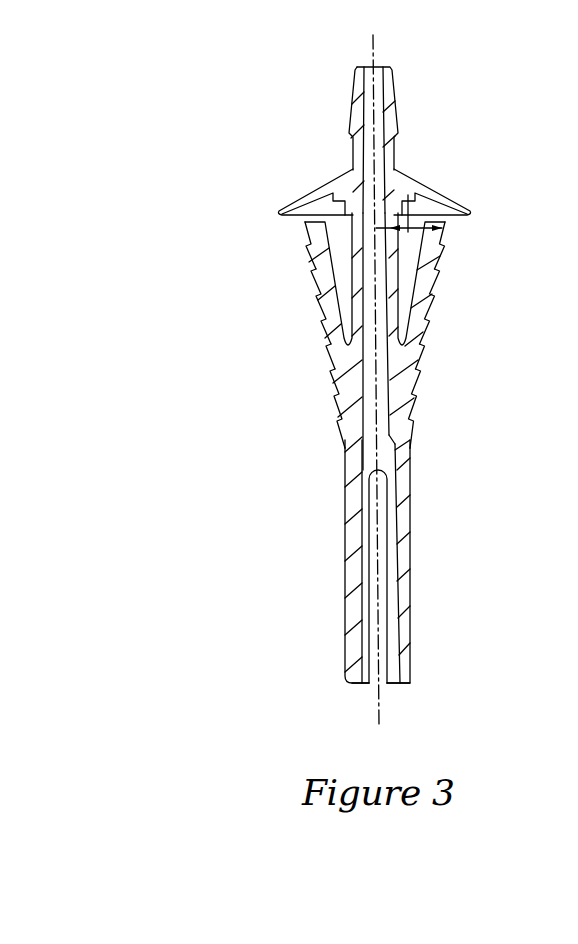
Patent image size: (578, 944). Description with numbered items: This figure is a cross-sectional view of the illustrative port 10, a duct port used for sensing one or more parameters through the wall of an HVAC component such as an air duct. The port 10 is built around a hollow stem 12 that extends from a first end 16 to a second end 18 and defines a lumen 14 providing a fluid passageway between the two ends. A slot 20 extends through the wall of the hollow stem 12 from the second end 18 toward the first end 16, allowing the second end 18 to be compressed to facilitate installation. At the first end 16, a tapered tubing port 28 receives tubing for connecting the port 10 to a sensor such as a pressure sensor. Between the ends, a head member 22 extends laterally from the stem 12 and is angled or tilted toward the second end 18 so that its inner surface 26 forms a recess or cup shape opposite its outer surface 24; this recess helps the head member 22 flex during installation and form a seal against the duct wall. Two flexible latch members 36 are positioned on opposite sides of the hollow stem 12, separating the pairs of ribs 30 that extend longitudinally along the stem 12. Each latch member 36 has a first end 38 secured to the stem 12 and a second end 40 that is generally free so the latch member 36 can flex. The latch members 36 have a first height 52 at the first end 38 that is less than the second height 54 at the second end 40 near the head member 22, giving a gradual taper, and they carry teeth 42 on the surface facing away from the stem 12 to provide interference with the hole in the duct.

The port 10 is at (130, 81).
The hollow stem 12 is at (348, 568).
The lumen 14 is at (372, 676).
The first end 16 is at (430, 102).
The second end 18 is at (445, 665).
The slot 20 is at (380, 528).
The head member 22 is at (288, 208).
The outer surface 24 is at (432, 187).
The inner surface 26 is at (468, 212).
The tubing port 28 is at (357, 68).
The ribs 30 is at (327, 295).
The latch members 36 is at (328, 332).
The first end 38 is at (368, 440).
The second end 40 is at (310, 229).
The teeth 42 is at (313, 258).
The first height 52 is at (450, 446).
The second height 54 is at (408, 203).